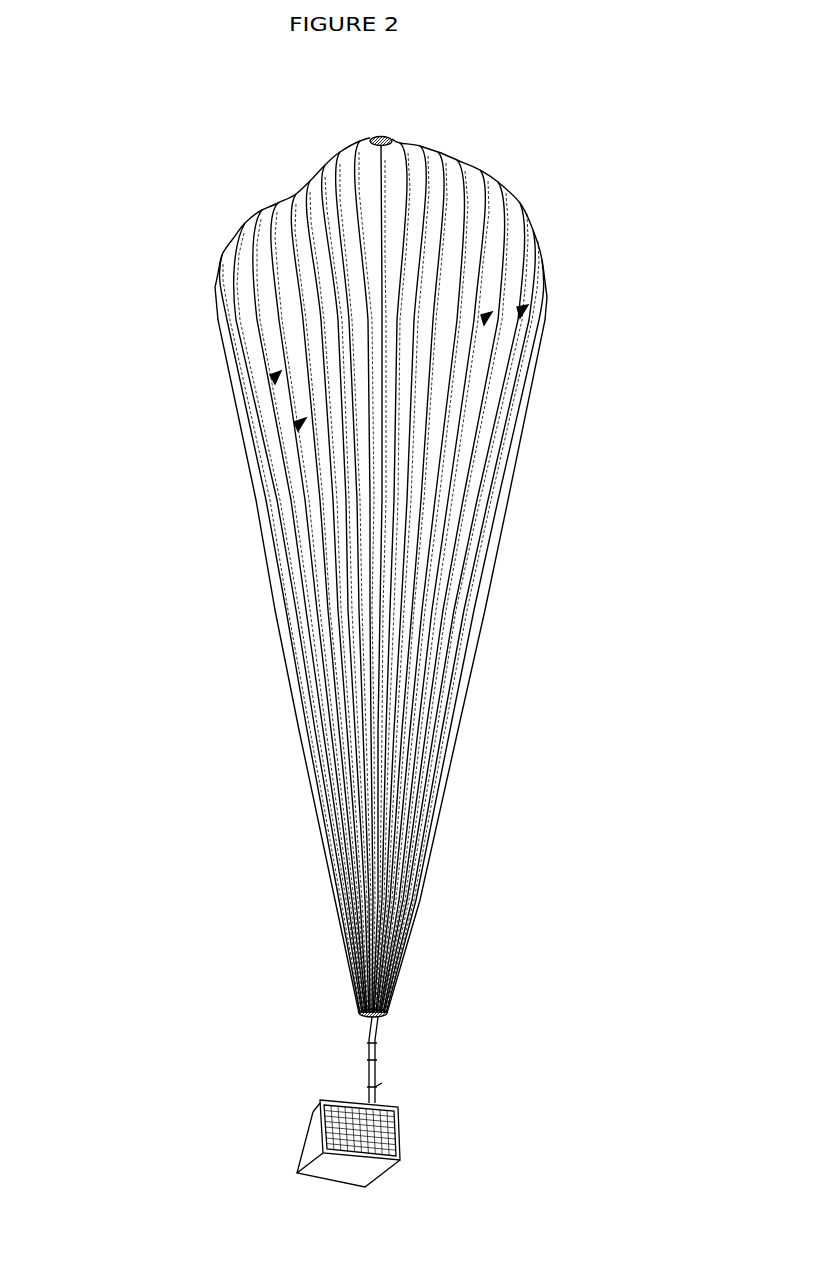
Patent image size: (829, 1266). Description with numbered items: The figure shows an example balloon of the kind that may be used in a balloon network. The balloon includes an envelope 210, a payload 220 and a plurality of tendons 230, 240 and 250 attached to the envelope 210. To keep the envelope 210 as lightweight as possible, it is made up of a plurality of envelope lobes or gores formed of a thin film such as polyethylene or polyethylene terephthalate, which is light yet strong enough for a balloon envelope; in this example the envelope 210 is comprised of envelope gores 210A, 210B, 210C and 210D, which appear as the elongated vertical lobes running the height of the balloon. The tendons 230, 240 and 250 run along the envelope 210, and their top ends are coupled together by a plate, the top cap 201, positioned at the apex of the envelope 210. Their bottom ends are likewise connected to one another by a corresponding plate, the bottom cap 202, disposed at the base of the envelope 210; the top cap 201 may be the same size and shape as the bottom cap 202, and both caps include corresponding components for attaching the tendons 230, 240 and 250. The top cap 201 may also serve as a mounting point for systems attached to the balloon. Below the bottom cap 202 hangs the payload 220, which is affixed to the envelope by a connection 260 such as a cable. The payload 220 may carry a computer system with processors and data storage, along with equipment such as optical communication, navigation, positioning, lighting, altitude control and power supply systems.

The top cap 201 is at (386, 137).
The bottom cap 202 is at (360, 1025).
The envelope 210 is at (472, 632).
The envelope gore 210A is at (277, 378).
The envelope gore 210B is at (300, 425).
The envelope gore 210C is at (488, 322).
The envelope gore 210D is at (524, 312).
The payload 220 is at (398, 1116).
The tendon 230 is at (228, 215).
The tendon 240 is at (268, 205).
The tendon 250 is at (531, 257).
The connection 260 is at (380, 1074).